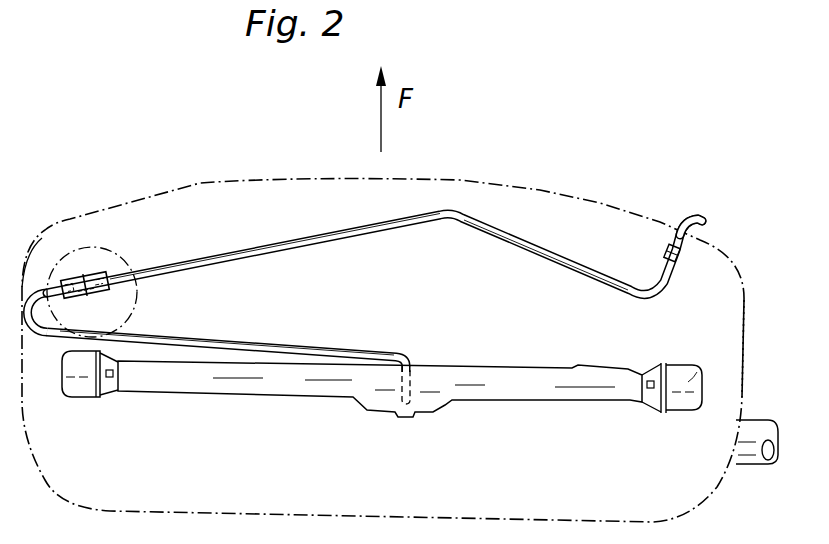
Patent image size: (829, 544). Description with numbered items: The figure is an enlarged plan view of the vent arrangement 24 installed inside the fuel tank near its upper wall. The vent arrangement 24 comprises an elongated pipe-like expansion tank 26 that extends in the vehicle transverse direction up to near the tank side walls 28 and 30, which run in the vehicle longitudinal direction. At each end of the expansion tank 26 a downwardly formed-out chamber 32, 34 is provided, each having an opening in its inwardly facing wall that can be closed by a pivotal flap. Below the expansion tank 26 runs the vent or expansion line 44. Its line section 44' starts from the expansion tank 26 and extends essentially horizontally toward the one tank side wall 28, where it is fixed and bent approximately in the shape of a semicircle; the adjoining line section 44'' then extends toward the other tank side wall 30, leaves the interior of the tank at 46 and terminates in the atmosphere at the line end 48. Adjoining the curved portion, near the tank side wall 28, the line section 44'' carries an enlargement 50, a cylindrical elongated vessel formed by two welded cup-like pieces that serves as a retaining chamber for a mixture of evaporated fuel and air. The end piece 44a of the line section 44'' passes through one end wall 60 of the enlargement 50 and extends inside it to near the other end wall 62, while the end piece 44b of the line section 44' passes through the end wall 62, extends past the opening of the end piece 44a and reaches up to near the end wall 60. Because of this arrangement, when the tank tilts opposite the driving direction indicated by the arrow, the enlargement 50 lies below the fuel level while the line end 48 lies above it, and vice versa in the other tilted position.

The vent arrangement 24 is at (304, 404).
The expansion tank 26 is at (250, 406).
The tank side wall 28 is at (42, 237).
The tank side wall 30 is at (741, 320).
The chamber 32 is at (80, 392).
The chamber 34 is at (700, 381).
The expansion line 44 is at (374, 210).
The line section 44' is at (228, 346).
The line section 44'' is at (250, 199).
The end piece 44a is at (68, 272).
The end piece 44b is at (135, 306).
The tank exit point 46 is at (668, 250).
The line end 48 is at (690, 227).
The enlargement 50 is at (92, 275).
The end wall 60 is at (110, 270).
The end wall 62 is at (64, 304).